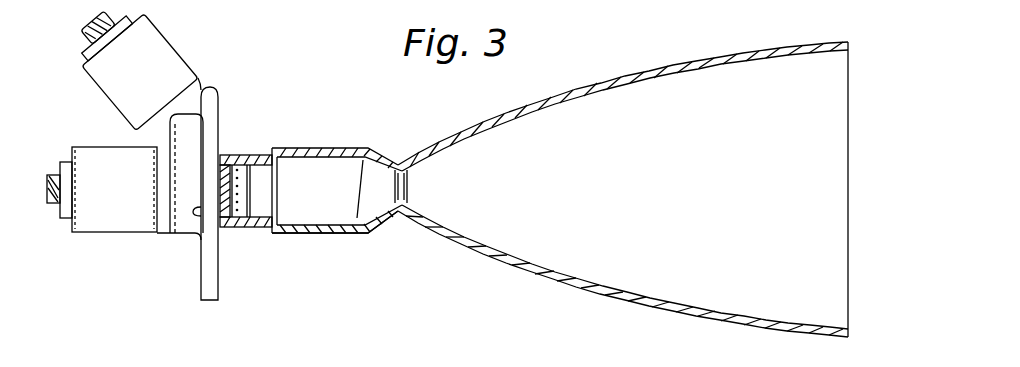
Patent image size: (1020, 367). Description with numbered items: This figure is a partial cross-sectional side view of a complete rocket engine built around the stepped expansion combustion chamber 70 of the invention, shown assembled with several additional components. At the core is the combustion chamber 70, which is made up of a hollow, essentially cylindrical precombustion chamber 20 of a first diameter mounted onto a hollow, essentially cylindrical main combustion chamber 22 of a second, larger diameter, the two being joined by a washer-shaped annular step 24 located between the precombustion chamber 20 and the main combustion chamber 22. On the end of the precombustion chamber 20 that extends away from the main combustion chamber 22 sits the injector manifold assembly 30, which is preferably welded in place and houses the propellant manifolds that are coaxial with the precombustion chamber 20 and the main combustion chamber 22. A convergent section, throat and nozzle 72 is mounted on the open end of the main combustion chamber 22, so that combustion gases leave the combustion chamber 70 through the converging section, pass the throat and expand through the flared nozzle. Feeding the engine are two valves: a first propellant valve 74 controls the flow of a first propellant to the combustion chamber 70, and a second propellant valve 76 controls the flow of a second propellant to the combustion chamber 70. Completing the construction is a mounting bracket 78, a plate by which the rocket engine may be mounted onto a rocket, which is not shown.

The precombustion chamber 20 is at (253, 153).
The main combustion chamber 22 is at (326, 233).
The annular step 24 is at (262, 230).
The injector manifold assembly 30 is at (225, 224).
The combustion chamber 70 is at (306, 149).
The convergent section, throat and nozzle 72 is at (553, 276).
The first propellant valve 74 is at (110, 88).
The second propellant valve 76 is at (105, 218).
The mounting bracket 78 is at (212, 265).